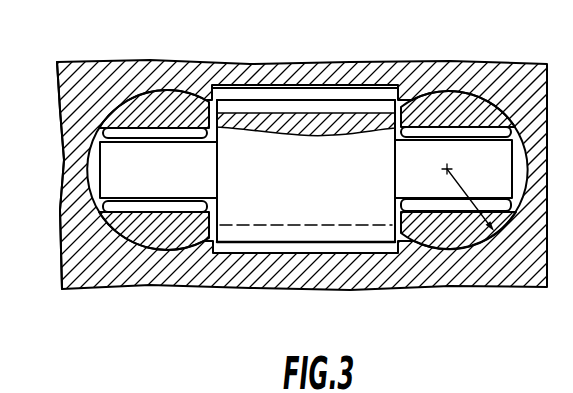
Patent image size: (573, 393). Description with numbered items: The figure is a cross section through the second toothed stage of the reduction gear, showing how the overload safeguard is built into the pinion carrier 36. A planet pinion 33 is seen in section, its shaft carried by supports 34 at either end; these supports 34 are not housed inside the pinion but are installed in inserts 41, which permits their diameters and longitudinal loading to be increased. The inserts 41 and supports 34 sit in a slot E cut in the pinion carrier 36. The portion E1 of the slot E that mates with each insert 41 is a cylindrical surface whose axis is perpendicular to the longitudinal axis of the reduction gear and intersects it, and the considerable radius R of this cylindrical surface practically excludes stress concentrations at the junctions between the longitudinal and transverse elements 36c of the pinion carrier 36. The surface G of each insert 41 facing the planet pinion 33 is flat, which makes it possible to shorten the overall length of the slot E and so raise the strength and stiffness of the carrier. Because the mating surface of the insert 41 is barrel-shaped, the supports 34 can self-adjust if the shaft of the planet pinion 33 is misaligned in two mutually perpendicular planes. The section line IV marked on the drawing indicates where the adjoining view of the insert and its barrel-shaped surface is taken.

The pinion carrier 36 is at (365, 76).
The transverse element of the pinion carrier 36c is at (72, 191).
The planet pinion 33 is at (300, 122).
The insert 41 is at (135, 113).
The support of the planet pinion 34 is at (477, 132).
The slot E is at (277, 243).
The portion of the slot E1 is at (455, 238).
The surface of the insert G is at (400, 212).
The radius of the cylindrical surface R is at (468, 192).
The section line IV- IV is at (163, 23).